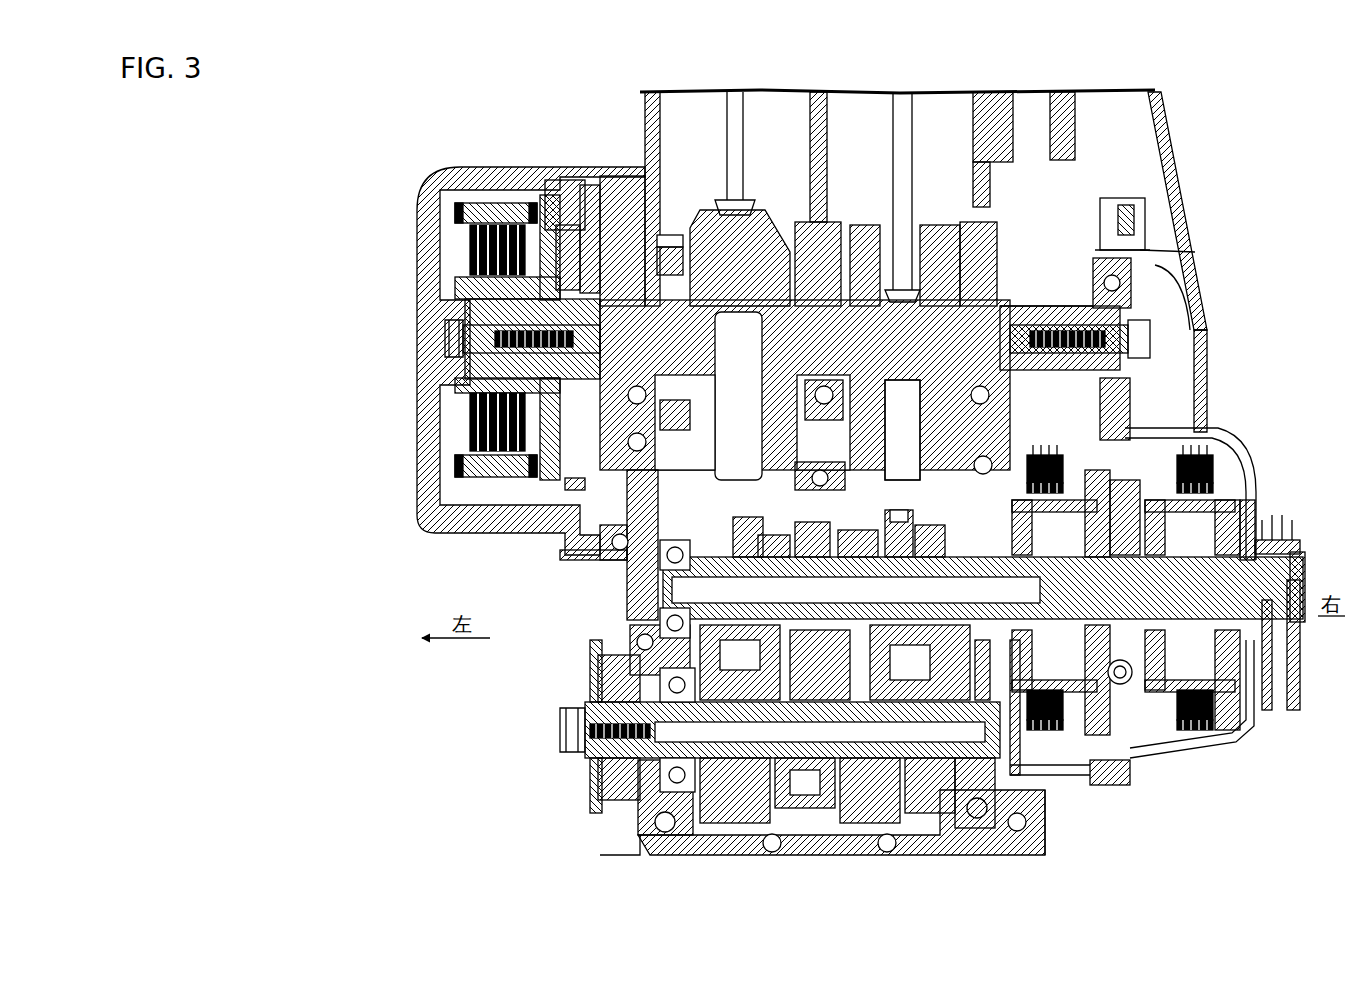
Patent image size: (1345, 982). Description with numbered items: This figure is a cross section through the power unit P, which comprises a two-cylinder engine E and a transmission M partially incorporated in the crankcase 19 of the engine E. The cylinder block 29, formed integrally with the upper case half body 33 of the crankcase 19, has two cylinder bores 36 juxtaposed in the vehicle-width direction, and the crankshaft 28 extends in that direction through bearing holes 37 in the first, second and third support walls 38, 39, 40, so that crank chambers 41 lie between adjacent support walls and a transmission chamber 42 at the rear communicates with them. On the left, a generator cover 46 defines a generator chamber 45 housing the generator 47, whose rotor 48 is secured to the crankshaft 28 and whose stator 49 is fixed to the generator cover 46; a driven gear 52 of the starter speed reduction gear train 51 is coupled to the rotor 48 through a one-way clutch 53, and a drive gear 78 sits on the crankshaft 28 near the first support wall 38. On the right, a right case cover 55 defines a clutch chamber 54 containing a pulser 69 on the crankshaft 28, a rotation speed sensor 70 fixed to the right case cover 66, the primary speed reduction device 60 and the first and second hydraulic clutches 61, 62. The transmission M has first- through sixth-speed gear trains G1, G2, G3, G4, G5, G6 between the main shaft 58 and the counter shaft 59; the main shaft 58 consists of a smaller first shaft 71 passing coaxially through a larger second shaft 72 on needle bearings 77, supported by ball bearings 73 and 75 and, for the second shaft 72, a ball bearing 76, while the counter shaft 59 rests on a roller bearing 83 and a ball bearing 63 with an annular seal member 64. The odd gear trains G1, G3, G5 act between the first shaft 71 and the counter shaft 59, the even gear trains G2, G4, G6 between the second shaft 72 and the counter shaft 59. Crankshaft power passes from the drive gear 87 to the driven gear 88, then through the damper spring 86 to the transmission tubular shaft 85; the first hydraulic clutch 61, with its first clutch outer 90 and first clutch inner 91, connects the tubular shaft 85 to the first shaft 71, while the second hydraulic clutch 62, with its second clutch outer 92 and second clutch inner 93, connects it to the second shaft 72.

The crankcase 19 is at (625, 594).
The crankshaft 28 is at (1005, 306).
The cylinder block 29 is at (645, 116).
The upper case half body 33 is at (628, 566).
The cylinder bores 36 is at (809, 126).
The bearing holes 37 is at (645, 374).
The first support wall 38 is at (628, 196).
The second support wall 39 is at (795, 226).
The third support wall 40 is at (965, 226).
The crank chambers 41 is at (728, 364).
The transmission chamber 42 is at (627, 513).
The generator chamber 45 is at (560, 190).
The generator cover 46 is at (497, 168).
The generator 47 is at (500, 502).
The rotor 48 is at (488, 500).
The stator 49 is at (476, 198).
The speed reduction gear train 51 is at (560, 515).
The driven gear 52 is at (578, 484).
The one-way clutch 53 is at (580, 246).
The clutch chamber 54 is at (1058, 404).
The right case cover 55 is at (1195, 381).
The main shaft 58 is at (879, 540).
The counter shaft 59 is at (600, 698).
The primary speed reduction device 60 is at (1132, 405).
The first hydraulic clutch 61 is at (1226, 710).
The second hydraulic clutch 62 is at (1085, 748).
The ball bearing 63 is at (640, 802).
The annular seal member 64 is at (640, 668).
The right case cover 66 is at (600, 790).
The pulser 69 is at (1160, 278).
The rotation speed sensor 70 is at (1125, 206).
The first shaft 71 is at (790, 535).
The second shaft 72 is at (916, 530).
The ball bearing 73 is at (632, 626).
The ball bearing 75 is at (1272, 514).
The ball bearing 76 is at (990, 476).
The needle bearings 77 is at (820, 545).
The drive gear 78 is at (675, 250).
The roller bearing 83 is at (1026, 812).
The transmission tubular shaft 85 is at (1095, 500).
The damper spring 86 is at (1116, 686).
The drive gear 87 is at (1103, 268).
The driven gear 88 is at (1140, 748).
The first clutch outer 90 is at (1220, 433).
The first clutch inner 91 is at (1238, 498).
The second clutch outer 92 is at (1040, 738).
The second clutch inner 93 is at (1062, 742).
The engine E is at (1192, 208).
The transmission M is at (771, 531).
The power unit P is at (1134, 778).
The first gear train G1 is at (692, 834).
The second gear train G2 is at (956, 831).
The third gear train G3 is at (800, 808).
The fourth gear train G4 is at (860, 800).
The fifth gear train G5 is at (729, 526).
The sixth gear train G6 is at (900, 500).